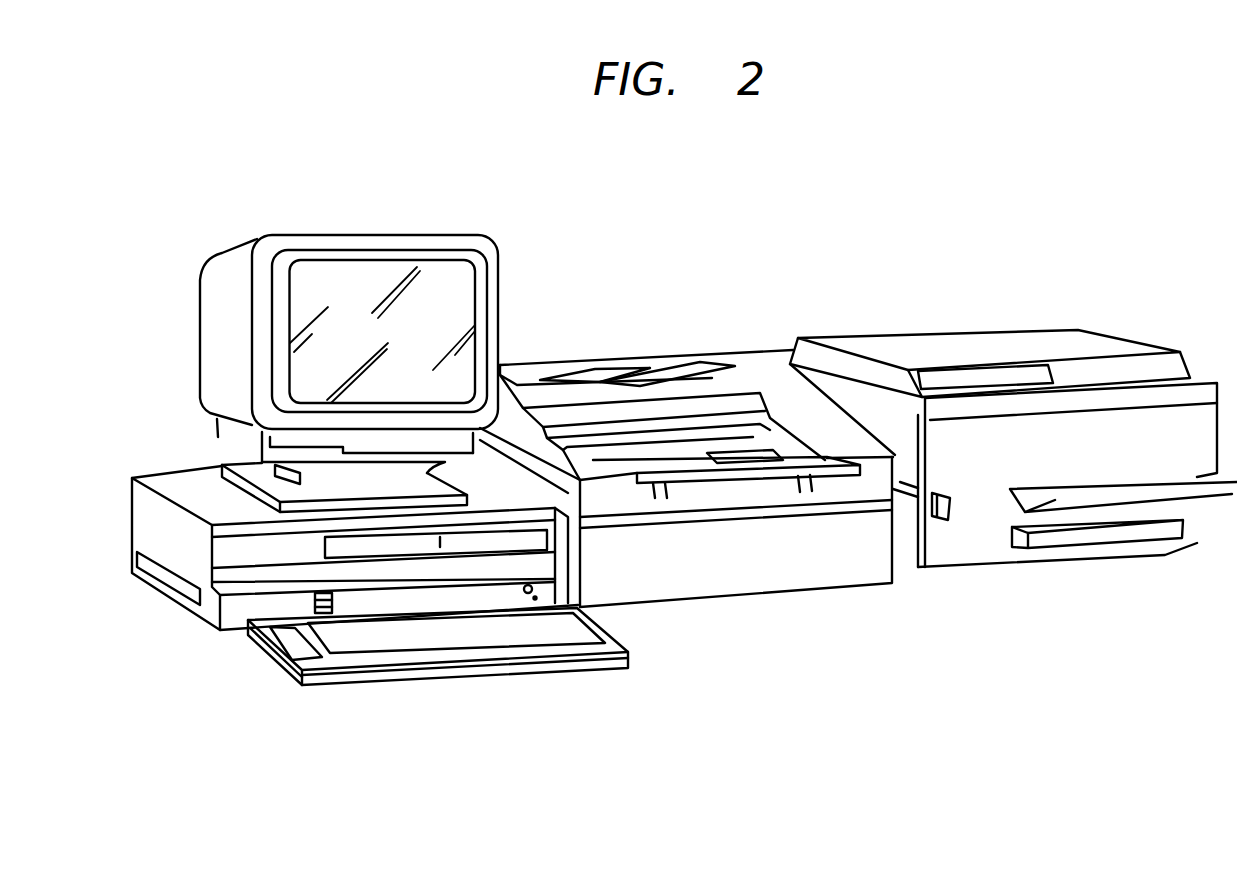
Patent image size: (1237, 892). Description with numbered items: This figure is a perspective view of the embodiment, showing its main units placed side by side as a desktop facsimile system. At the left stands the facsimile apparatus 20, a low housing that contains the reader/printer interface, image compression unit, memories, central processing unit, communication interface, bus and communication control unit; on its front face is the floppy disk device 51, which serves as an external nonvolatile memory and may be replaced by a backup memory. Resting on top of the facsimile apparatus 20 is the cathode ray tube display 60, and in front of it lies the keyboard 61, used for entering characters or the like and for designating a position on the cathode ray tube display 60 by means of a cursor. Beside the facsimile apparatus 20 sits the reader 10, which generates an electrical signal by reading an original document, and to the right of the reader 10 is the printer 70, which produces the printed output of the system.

The reader 10 is at (677, 372).
The facsimile apparatus 20 is at (182, 610).
The floppy disk device 51 is at (542, 540).
The cathode ray tube display 60 is at (388, 231).
The keyboard 61 is at (490, 675).
The printer 70 is at (1040, 330).